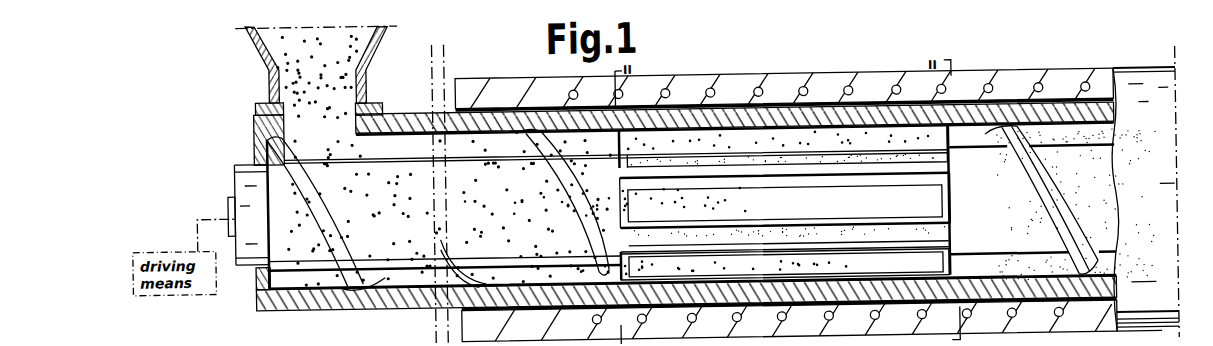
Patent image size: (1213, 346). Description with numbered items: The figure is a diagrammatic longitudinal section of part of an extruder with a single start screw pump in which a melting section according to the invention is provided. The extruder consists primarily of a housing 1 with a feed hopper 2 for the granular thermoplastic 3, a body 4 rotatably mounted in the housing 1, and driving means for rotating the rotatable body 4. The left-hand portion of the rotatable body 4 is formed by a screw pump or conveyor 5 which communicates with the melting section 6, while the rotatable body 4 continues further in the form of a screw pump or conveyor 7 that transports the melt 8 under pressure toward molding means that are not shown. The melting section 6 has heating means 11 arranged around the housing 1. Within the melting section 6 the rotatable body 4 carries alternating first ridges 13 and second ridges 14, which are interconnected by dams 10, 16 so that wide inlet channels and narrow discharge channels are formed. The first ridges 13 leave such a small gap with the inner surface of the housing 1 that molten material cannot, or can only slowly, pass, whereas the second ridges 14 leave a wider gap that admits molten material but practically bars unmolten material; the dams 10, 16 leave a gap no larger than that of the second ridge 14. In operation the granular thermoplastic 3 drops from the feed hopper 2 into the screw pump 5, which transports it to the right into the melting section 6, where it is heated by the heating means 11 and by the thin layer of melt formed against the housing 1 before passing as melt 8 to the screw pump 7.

The housing 1 is at (790, 79).
The feed hopper 2 is at (370, 66).
The granular thermoplastic 3 is at (290, 60).
The rotatable body 4 is at (589, 166).
The screw pump 5 is at (357, 280).
The melting section 6 is at (848, 72).
The screw pump 7 is at (1006, 134).
The melt 8 is at (1056, 135).
The dam 10 is at (638, 162).
The heating means 11 is at (743, 94).
The first ridges 13 is at (856, 180).
The second ridges 14 is at (897, 158).
The dam 16 is at (968, 155).